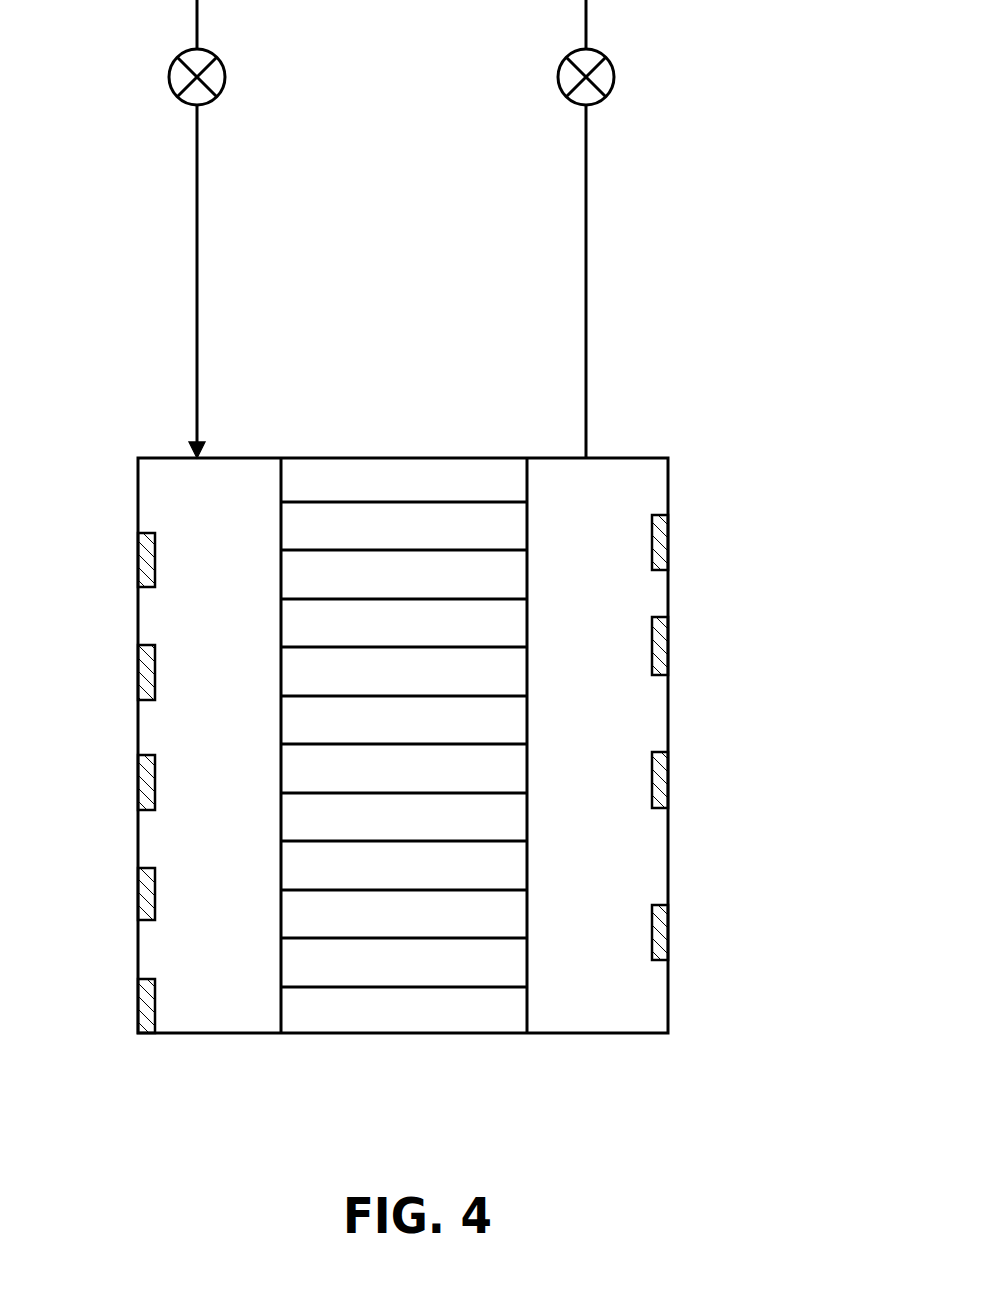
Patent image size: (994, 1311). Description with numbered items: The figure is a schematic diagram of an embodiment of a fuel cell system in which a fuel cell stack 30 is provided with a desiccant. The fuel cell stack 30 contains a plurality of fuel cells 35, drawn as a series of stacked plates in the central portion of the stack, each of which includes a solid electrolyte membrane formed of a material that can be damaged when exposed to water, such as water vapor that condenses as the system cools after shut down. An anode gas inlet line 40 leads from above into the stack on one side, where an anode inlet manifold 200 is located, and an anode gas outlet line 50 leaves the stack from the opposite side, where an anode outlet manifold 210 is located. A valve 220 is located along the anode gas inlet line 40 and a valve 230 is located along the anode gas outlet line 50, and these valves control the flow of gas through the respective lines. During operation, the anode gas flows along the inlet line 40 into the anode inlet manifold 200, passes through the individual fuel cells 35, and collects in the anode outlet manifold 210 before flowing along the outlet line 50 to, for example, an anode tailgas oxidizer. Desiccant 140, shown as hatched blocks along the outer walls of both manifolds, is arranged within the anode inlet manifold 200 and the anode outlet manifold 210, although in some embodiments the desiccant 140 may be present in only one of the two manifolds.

The fuel cell stack 30 is at (783, 683).
The fuel cells 35 is at (341, 972).
The anode gas inlet line 40 is at (196, 252).
The anode gas outlet line 50 is at (585, 258).
The desiccant 140 is at (666, 533).
The anode inlet manifold 200 is at (160, 834).
The anode outlet manifold 210 is at (650, 836).
The valve 220 is at (169, 75).
The valve 230 is at (558, 75).